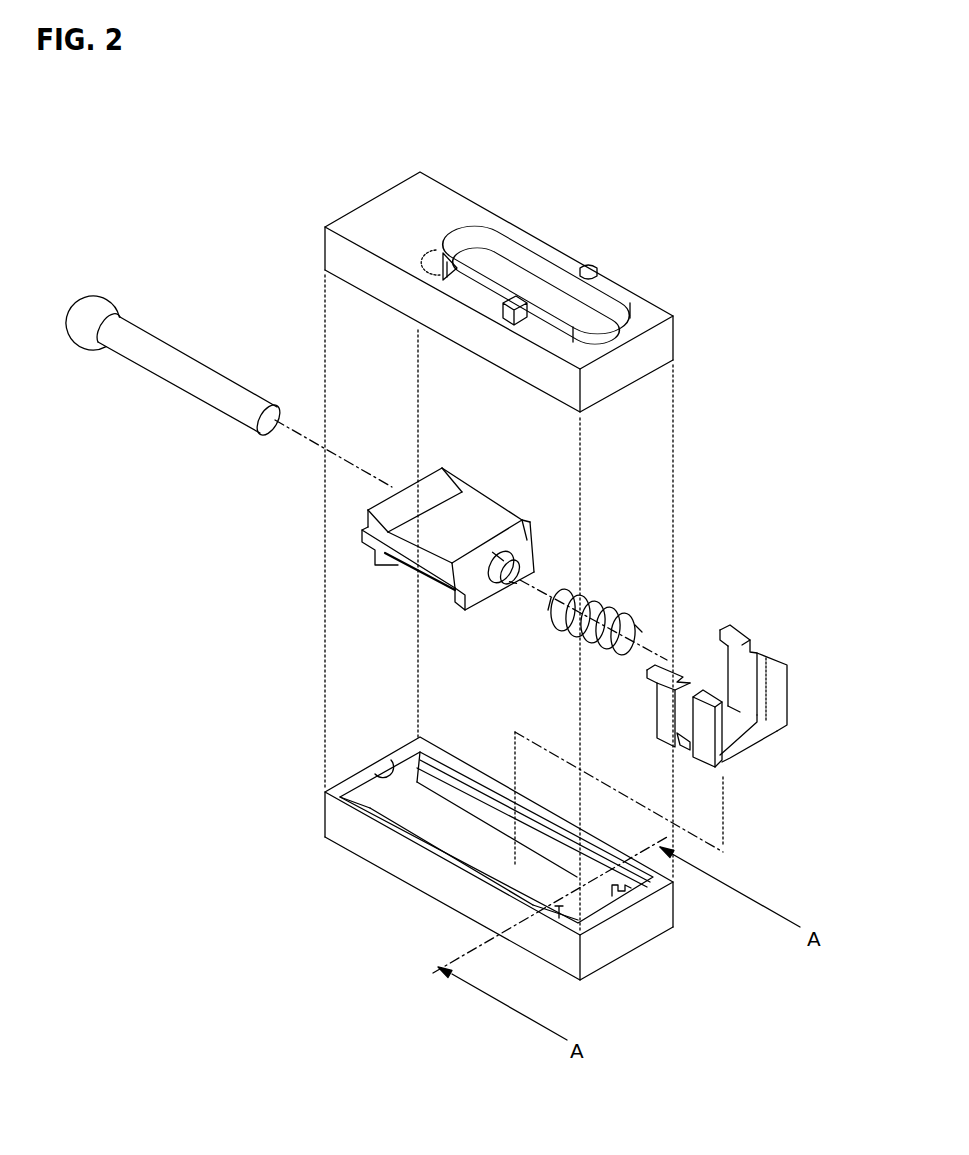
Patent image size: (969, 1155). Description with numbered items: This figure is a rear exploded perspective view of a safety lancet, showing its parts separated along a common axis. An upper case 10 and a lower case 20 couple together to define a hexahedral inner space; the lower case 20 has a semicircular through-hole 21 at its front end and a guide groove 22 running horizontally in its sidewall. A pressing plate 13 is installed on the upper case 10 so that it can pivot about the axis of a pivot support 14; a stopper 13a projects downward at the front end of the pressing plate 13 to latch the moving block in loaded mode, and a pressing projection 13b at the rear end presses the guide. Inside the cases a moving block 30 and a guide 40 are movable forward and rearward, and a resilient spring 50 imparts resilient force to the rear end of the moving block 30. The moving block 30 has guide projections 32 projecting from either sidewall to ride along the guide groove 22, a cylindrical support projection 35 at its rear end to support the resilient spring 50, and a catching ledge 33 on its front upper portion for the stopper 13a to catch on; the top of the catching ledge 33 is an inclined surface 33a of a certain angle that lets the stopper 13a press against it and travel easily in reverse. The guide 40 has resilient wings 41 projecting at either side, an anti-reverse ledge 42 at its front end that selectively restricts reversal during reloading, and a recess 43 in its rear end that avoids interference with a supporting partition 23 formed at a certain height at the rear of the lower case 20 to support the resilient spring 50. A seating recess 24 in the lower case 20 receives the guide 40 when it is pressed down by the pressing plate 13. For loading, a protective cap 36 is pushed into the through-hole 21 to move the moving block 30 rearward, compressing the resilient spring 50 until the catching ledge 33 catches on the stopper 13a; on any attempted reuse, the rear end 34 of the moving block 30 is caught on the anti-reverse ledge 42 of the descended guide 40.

The upper case 10 is at (667, 342).
The pressing plate 13 is at (538, 253).
The stopper 13a is at (443, 283).
The pressing projection 13b is at (562, 337).
The pivot support 14 is at (583, 268).
The lower case 20 is at (532, 852).
The through-hole 21 is at (383, 774).
The guide groove 22 is at (455, 770).
The supporting partition 23 is at (615, 888).
The seating recess 24 is at (560, 908).
The moving block 30 is at (410, 537).
The guide projection 32 is at (410, 562).
The catching ledge 33 is at (360, 502).
The inclined surface 33a is at (412, 497).
The rear end 34 is at (522, 520).
The support projection 35 is at (505, 587).
The protective cap 36 is at (187, 362).
The guide 40 is at (739, 666).
The resilient wing 41 is at (680, 742).
The anti-reverse ledge 42 is at (718, 630).
The recess 43 is at (748, 736).
The resilient spring 50 is at (605, 648).